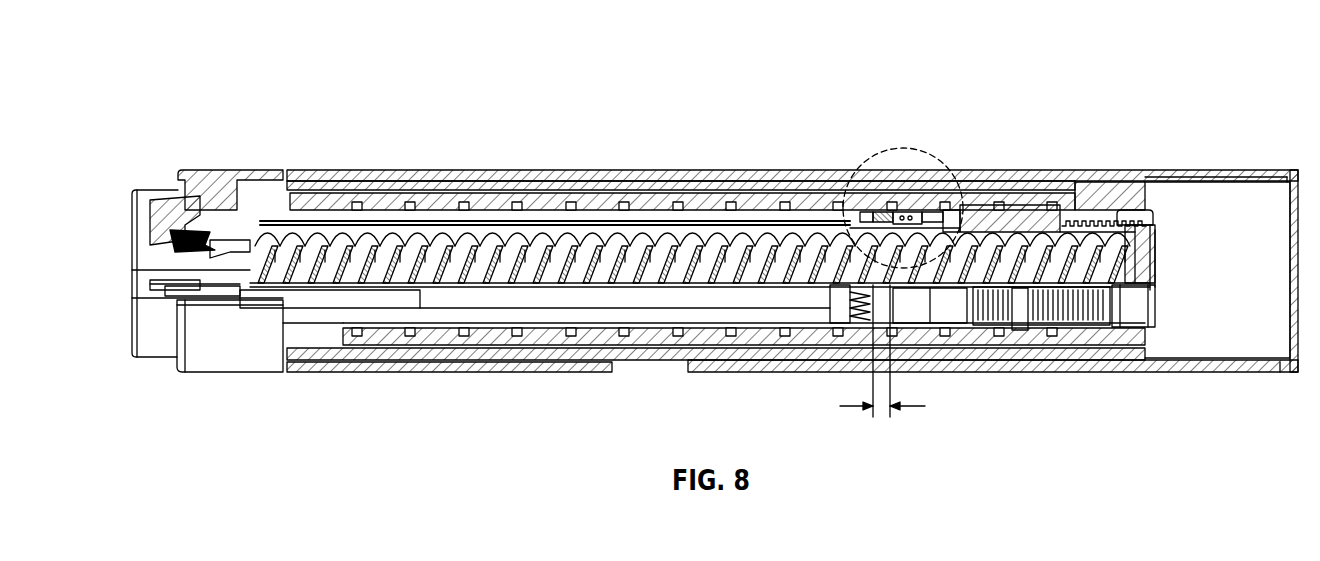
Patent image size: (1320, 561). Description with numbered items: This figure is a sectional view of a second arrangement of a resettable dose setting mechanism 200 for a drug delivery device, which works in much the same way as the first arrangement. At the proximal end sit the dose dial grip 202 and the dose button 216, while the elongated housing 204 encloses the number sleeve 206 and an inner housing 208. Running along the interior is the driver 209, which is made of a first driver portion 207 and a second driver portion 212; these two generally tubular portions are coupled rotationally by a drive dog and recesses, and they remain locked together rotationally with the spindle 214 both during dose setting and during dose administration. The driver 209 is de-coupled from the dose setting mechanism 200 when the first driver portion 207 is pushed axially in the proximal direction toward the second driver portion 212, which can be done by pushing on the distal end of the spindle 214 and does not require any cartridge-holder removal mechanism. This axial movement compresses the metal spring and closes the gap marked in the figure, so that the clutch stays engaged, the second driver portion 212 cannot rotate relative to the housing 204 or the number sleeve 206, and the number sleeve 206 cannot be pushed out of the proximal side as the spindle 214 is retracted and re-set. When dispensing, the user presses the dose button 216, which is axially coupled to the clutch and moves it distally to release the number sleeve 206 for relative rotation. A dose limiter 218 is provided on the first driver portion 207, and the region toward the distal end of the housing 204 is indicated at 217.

The dose setting mechanism 200 is at (790, 66).
The dose dial grip 202 is at (220, 170).
The housing 204 is at (585, 190).
The number sleeve 206 is at (372, 180).
The first driver portion 207 is at (1110, 213).
The inner housing 208 is at (1102, 190).
The driver 209 is at (460, 233).
The second driver portion 212 is at (982, 180).
The spindle 214 is at (1157, 267).
The dose button 216 is at (130, 258).
The cavity 217 is at (1183, 292).
The dose limiter 218 is at (1020, 330).